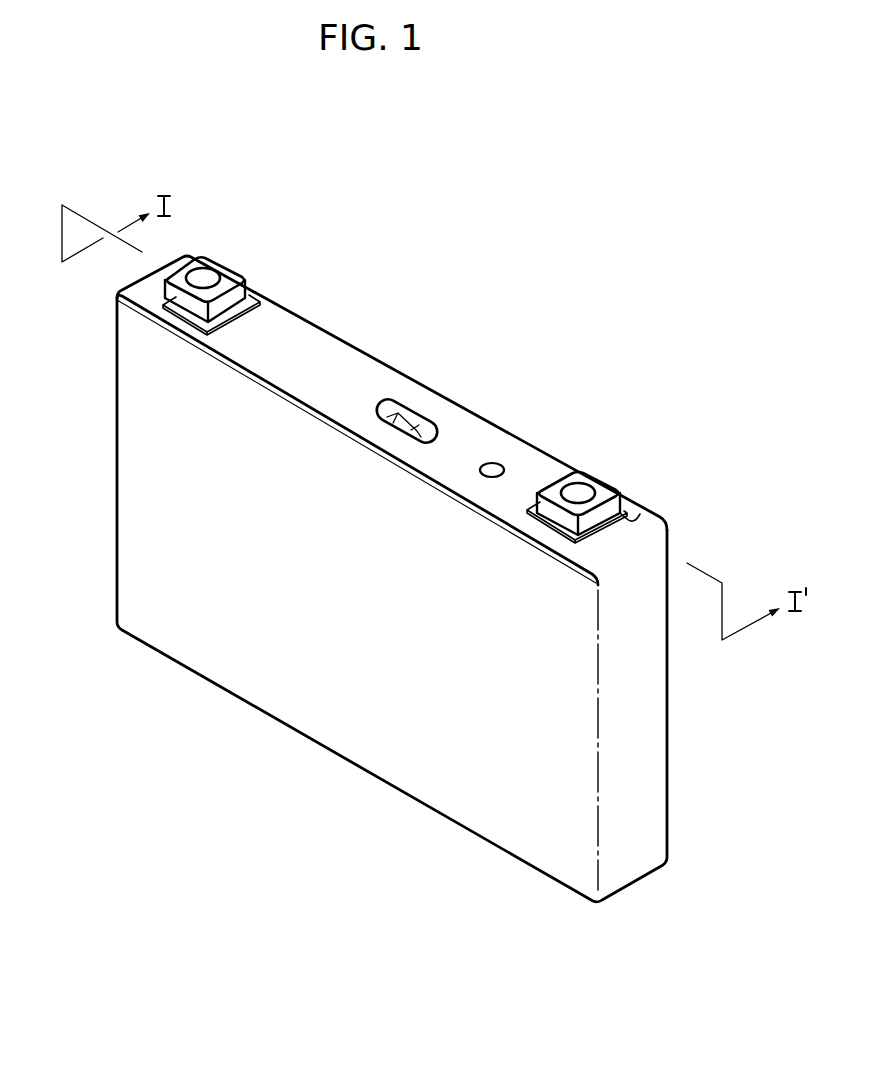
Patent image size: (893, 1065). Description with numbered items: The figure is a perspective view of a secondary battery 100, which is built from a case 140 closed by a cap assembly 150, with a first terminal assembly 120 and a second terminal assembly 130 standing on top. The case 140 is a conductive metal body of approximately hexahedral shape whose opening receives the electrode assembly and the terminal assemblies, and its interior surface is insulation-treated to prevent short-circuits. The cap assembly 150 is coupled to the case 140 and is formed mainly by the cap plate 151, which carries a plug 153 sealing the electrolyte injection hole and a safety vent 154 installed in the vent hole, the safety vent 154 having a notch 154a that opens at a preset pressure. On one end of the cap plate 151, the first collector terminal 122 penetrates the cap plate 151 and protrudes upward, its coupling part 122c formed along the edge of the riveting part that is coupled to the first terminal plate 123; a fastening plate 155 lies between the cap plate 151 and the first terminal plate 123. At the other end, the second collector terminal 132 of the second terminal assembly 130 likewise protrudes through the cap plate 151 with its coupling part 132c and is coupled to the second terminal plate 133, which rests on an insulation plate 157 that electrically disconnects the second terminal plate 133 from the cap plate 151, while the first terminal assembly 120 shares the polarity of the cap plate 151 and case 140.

The secondary battery 100 is at (378, 527).
The first terminal assembly 120 is at (183, 251).
The first collector terminal 122 is at (142, 262).
The coupling part 122c is at (187, 279).
The first terminal plate 123 is at (239, 262).
The second terminal assembly 130 is at (631, 460).
The second collector terminal 132 is at (617, 456).
The coupling part 132c is at (596, 492).
The second terminal plate 133 is at (624, 483).
The case 140 is at (340, 744).
The cap assembly 150 is at (392, 417).
The cap plate 151 is at (313, 342).
The plug 153 is at (492, 464).
The safety vent 154 is at (441, 377).
The notch 154a is at (413, 423).
The fastening plate 155 is at (249, 296).
The insulation plate 157 is at (647, 520).